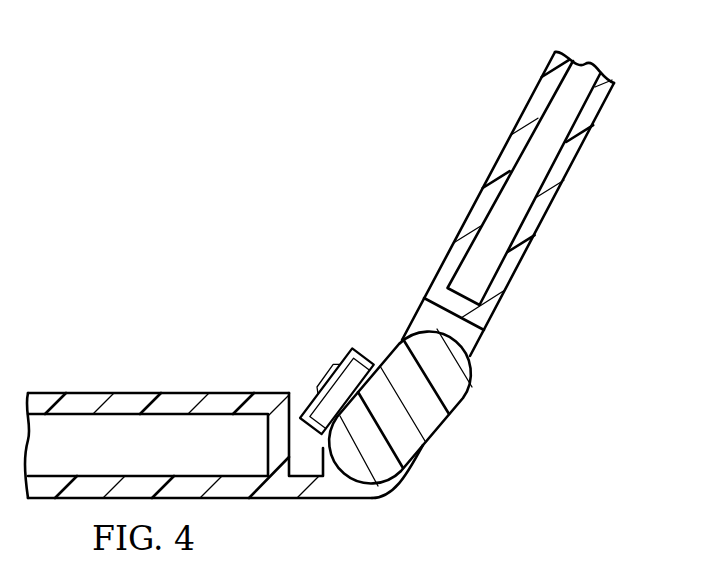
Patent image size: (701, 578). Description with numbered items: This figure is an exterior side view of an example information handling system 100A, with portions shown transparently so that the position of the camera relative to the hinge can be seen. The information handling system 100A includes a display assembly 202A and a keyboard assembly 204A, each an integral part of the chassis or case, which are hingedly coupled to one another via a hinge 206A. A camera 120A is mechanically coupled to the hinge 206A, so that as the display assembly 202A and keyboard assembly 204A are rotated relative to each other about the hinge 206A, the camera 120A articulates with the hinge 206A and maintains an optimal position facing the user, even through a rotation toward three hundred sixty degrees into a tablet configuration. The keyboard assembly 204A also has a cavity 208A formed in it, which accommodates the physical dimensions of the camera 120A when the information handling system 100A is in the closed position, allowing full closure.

The information handling system 100A is at (138, 89).
The display assembly 202A is at (577, 158).
The keyboard assembly 204A is at (88, 393).
The camera 120A is at (316, 386).
The hinge 206A is at (442, 423).
The cavity 208A is at (308, 468).